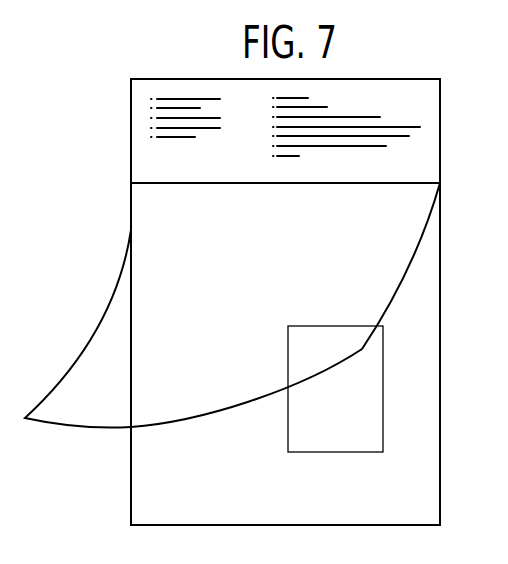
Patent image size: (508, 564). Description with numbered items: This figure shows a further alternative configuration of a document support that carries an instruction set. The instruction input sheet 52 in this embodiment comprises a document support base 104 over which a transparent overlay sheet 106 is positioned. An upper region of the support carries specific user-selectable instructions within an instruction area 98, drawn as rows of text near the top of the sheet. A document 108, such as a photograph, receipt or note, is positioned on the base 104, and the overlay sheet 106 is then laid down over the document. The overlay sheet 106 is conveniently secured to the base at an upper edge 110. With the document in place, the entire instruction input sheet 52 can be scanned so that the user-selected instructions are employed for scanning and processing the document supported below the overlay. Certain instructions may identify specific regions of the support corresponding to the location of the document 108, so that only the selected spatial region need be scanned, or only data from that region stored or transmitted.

The document support base 104 is at (157, 505).
The upper edge 110 is at (186, 78).
The instruction input sheet 52 is at (147, 165).
The instruction area 98 is at (149, 118).
The transparent overlay sheet 106 is at (102, 427).
The document 108 is at (328, 453).